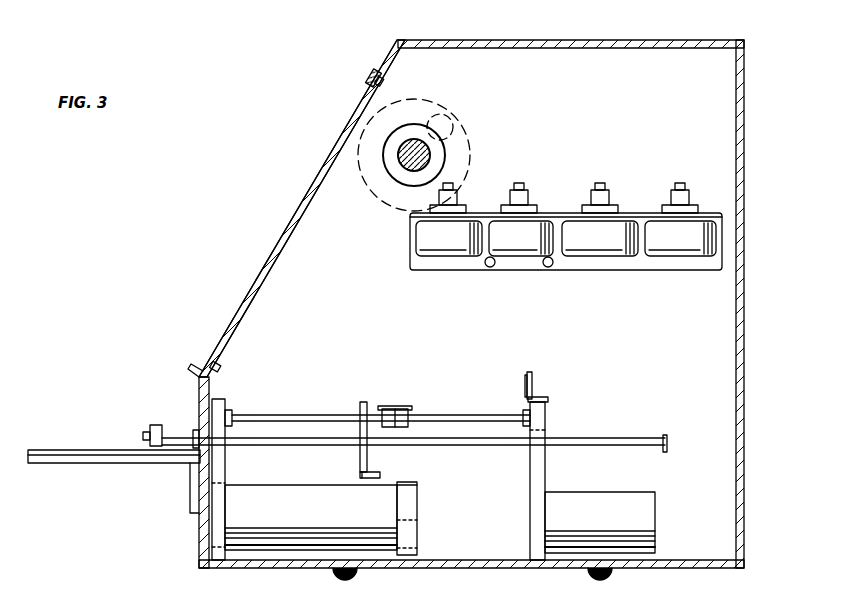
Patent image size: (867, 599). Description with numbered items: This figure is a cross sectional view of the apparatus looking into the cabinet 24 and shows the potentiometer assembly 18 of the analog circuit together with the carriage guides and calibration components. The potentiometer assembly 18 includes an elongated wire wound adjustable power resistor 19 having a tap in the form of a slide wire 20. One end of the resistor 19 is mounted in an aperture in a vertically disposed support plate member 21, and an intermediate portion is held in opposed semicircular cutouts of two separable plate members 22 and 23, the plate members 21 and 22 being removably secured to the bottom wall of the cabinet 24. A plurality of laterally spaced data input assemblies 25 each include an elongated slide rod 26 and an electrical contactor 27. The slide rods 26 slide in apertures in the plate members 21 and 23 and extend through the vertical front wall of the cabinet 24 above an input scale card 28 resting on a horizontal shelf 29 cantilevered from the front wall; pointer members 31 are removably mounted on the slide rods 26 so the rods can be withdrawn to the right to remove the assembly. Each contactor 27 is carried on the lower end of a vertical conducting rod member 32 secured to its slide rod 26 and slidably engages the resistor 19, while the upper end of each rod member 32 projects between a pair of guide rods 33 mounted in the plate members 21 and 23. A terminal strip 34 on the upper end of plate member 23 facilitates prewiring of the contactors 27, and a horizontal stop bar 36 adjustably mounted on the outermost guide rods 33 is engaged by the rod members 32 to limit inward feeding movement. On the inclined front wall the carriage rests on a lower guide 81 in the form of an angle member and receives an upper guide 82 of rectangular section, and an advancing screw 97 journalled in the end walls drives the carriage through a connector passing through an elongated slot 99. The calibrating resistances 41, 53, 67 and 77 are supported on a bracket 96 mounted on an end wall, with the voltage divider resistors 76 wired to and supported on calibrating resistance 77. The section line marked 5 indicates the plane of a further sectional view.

The cabinet 24 is at (397, 44).
The upper guide 82 is at (370, 80).
The slot 99 is at (347, 122).
The guide 81 is at (197, 366).
The advancing screw 97 is at (430, 155).
The bracket 96 is at (634, 268).
The resistances 76 is at (548, 268).
The adjustable calibrating resistance 41 is at (460, 198).
The adjustable calibrating resistance 77 is at (529, 200).
The adjustable calibrating resistance 53 is at (606, 201).
The adjustable calibrating resistance 67 is at (688, 205).
The potentiometer assembly 18 is at (385, 455).
The support plate member 21 is at (215, 512).
The plate member 23 is at (545, 476).
The terminal strip 34 is at (532, 380).
The guide rods 33 is at (296, 414).
The slide rod 26 is at (195, 436).
The pointer members 31 is at (150, 433).
The rod member 32 is at (366, 403).
The stop bar 36 is at (405, 407).
The electrical contactor 27 is at (365, 477).
The wire wound adjustable power resistor 19 is at (278, 505).
The plate member 22 is at (545, 525).
The slide wire 20 is at (400, 486).
The shelf 29 is at (78, 463).
The input scale card 28 is at (97, 449).
The data input assembly 25 is at (165, 425).
The section line 5- 5 is at (250, 387).